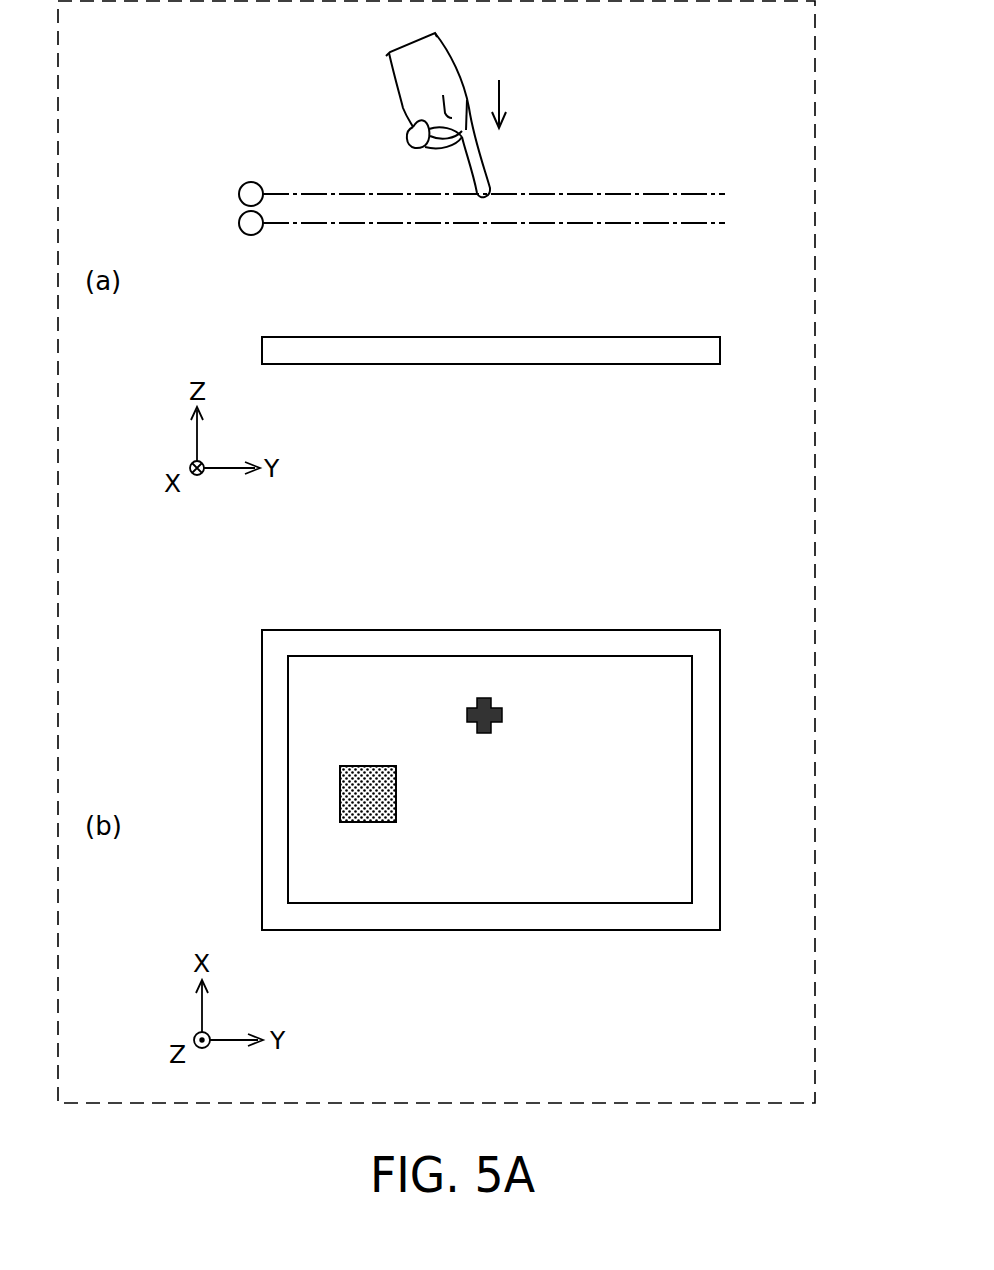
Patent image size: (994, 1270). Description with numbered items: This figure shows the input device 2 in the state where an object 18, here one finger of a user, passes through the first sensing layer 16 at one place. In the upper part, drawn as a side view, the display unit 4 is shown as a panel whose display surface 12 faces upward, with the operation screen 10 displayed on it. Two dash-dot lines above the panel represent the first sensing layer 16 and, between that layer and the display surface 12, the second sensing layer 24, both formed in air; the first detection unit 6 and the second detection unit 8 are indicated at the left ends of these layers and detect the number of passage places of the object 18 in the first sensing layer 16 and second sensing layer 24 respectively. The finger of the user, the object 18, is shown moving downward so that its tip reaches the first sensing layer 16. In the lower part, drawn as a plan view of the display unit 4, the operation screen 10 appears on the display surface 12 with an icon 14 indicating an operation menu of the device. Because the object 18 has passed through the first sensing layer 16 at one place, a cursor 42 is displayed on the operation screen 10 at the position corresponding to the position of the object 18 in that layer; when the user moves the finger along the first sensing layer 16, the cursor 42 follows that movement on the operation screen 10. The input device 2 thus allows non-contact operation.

The input device 2 is at (698, 156).
The display unit 4 is at (265, 355).
The first detection unit 6 is at (239, 196).
The second detection unit 8 is at (239, 228).
The operation screen 10 is at (603, 337).
The display surface 12 is at (497, 337).
The icon 14 is at (397, 796).
The first sensing layer 16 is at (710, 195).
The object 18 is at (481, 160).
The second sensing layer 24 is at (710, 223).
The cursor 42 is at (502, 714).